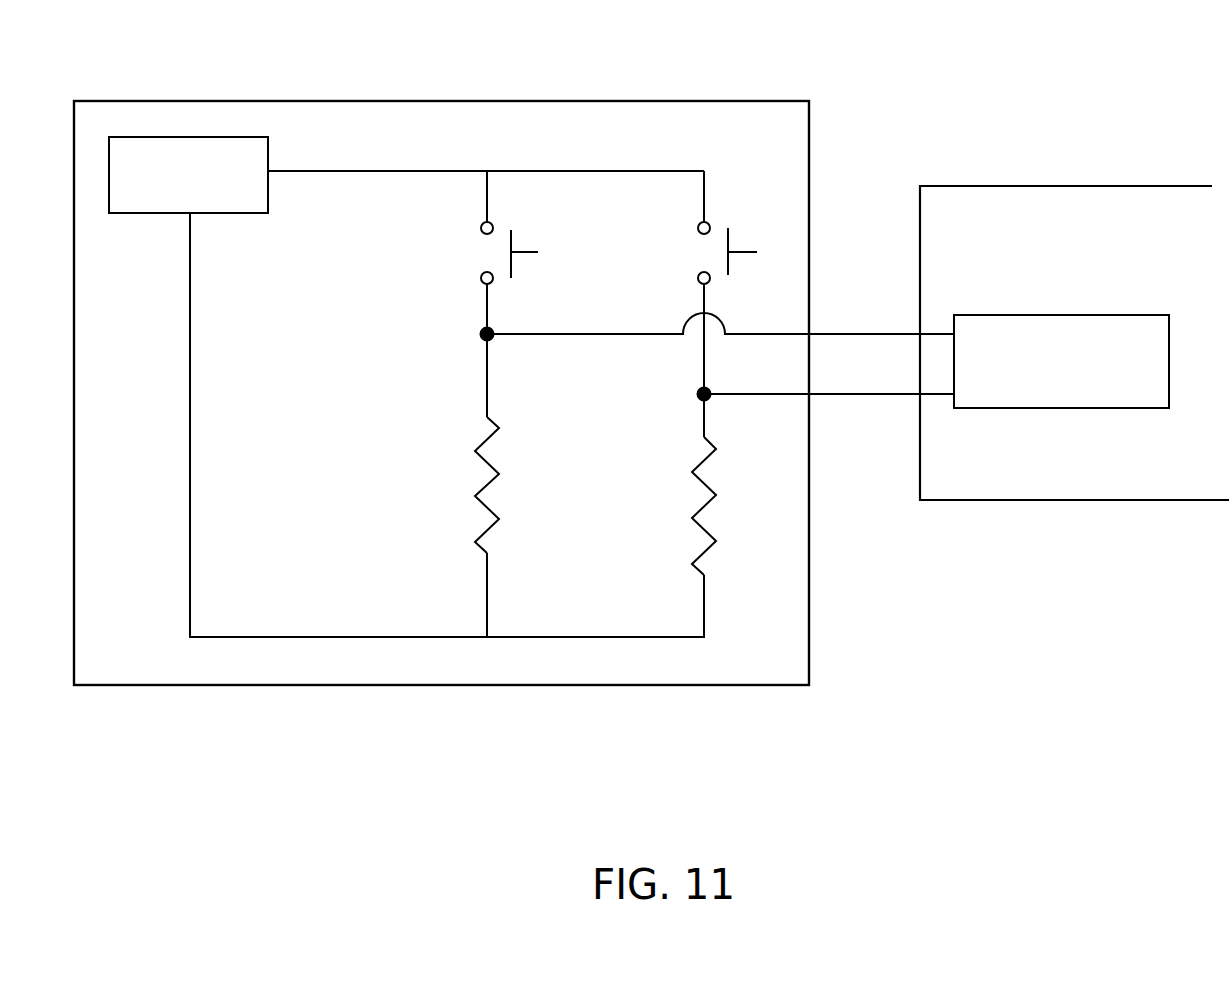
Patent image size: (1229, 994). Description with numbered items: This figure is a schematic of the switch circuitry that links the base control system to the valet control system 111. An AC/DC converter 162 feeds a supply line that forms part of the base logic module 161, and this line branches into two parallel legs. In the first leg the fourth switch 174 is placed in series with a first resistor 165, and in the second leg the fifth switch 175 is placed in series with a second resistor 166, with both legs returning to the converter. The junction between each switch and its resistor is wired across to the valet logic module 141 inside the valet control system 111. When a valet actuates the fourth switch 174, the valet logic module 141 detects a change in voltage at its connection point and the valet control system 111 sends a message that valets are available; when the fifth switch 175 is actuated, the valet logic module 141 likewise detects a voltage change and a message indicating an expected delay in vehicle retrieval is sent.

The valet control system 111 is at (1132, 186).
The valet logic module 141 is at (1099, 314).
The base logic module 161 is at (535, 171).
The AC/DC converter 162 is at (224, 137).
The first resistor 165 is at (491, 505).
The second resistor 166 is at (714, 528).
The fourth switch 174 is at (519, 248).
The fifth switch 175 is at (748, 237).